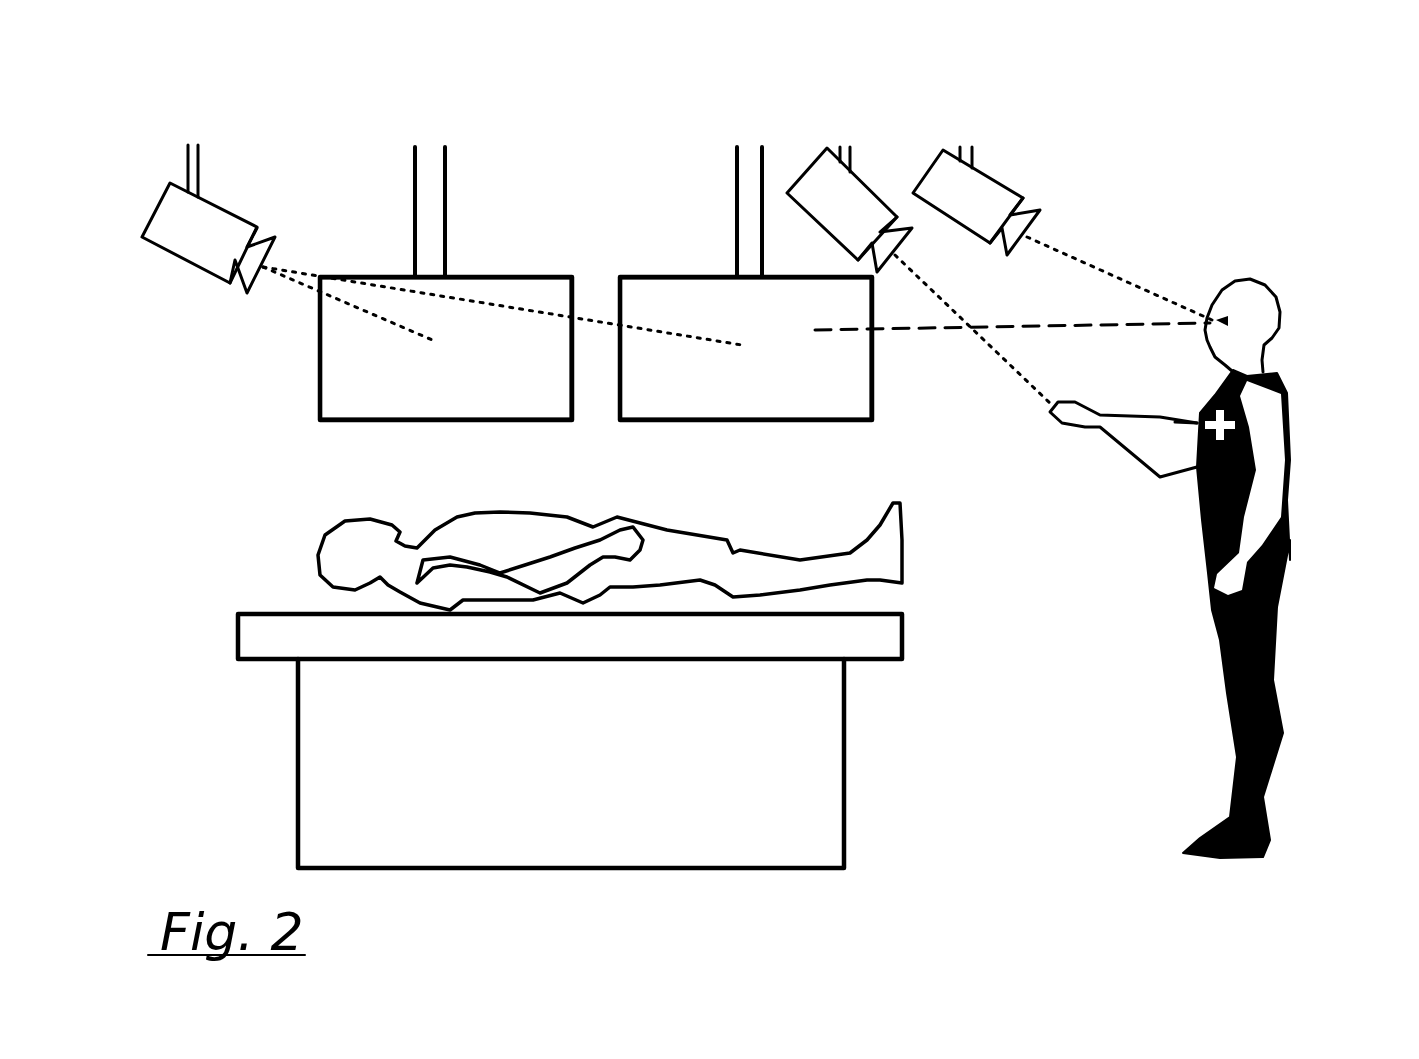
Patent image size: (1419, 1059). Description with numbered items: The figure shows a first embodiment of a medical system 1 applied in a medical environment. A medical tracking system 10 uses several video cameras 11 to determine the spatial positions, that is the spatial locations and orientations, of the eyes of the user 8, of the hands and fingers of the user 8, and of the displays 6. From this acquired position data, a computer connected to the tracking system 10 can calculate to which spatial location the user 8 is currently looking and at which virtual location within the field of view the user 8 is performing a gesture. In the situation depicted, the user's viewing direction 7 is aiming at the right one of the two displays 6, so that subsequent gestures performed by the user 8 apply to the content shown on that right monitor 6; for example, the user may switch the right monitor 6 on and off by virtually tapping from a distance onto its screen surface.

The medical system 1 is at (1165, 98).
The display 6 is at (490, 388).
The viewing direction 7 is at (902, 328).
The user 8 is at (1330, 439).
The medical tracking system 10 is at (240, 145).
The video camera 11 is at (178, 225).